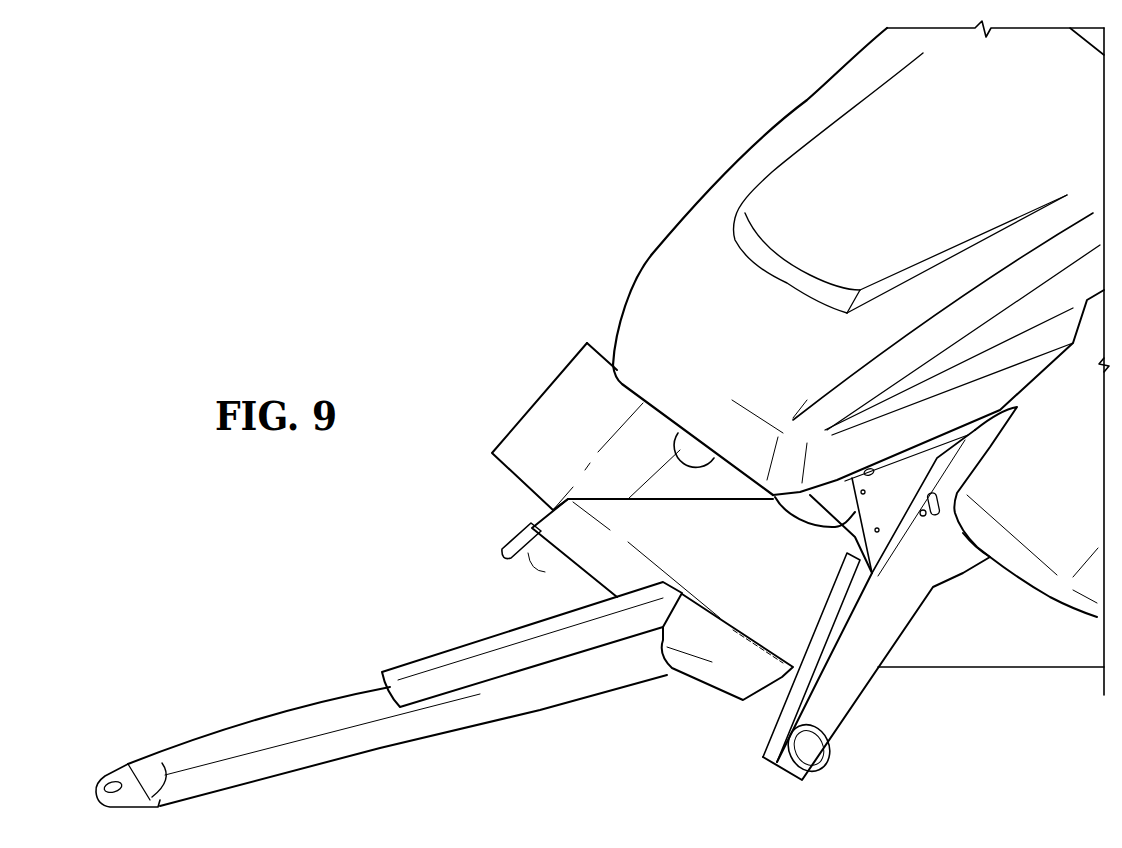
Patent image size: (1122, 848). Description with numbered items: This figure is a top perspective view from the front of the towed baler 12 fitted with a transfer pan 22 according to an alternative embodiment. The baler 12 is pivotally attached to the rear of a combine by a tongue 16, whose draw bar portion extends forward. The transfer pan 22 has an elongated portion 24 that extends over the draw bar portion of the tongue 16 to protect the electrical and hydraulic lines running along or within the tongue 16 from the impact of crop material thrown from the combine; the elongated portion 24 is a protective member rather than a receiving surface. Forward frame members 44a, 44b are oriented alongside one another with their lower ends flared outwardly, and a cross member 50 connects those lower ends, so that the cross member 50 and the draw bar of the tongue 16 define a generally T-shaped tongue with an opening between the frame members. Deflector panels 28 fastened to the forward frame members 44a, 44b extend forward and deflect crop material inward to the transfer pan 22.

The baler 12 is at (632, 152).
The tongue 16 is at (263, 737).
The transfer pan 22 is at (942, 648).
The elongated portion 24 is at (453, 658).
The deflector panel 28 is at (517, 463).
The forward frame member 44a is at (527, 522).
The forward frame member 44b is at (837, 698).
The cross member 50 is at (713, 693).